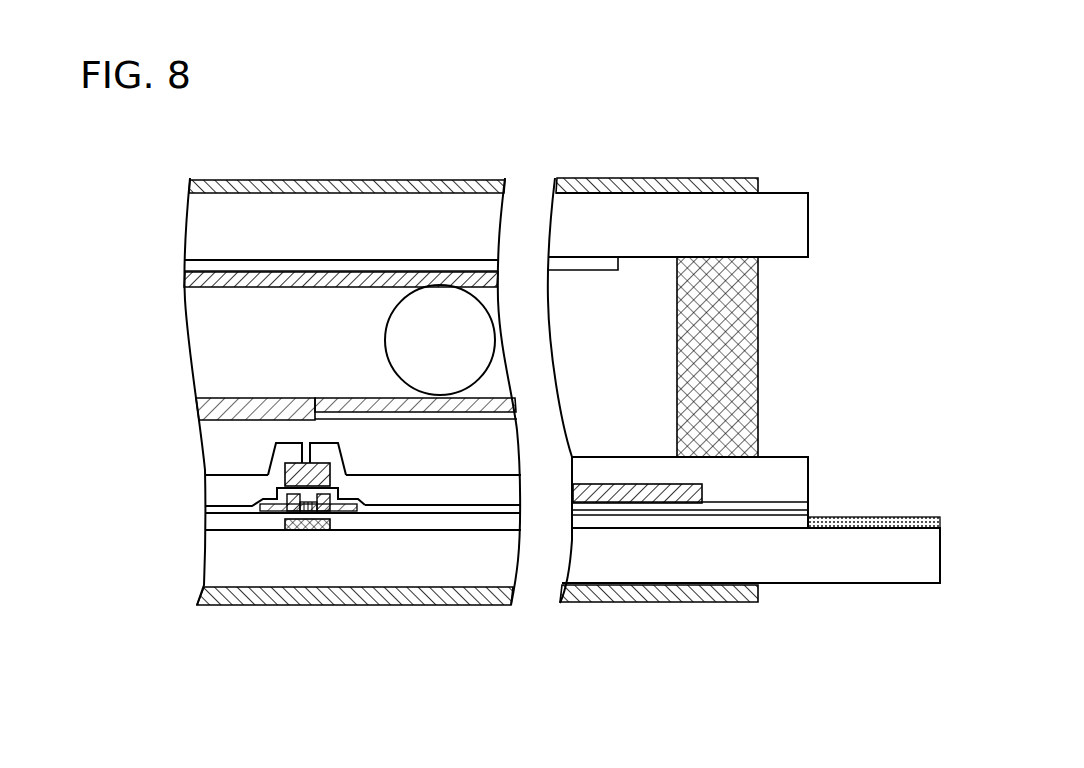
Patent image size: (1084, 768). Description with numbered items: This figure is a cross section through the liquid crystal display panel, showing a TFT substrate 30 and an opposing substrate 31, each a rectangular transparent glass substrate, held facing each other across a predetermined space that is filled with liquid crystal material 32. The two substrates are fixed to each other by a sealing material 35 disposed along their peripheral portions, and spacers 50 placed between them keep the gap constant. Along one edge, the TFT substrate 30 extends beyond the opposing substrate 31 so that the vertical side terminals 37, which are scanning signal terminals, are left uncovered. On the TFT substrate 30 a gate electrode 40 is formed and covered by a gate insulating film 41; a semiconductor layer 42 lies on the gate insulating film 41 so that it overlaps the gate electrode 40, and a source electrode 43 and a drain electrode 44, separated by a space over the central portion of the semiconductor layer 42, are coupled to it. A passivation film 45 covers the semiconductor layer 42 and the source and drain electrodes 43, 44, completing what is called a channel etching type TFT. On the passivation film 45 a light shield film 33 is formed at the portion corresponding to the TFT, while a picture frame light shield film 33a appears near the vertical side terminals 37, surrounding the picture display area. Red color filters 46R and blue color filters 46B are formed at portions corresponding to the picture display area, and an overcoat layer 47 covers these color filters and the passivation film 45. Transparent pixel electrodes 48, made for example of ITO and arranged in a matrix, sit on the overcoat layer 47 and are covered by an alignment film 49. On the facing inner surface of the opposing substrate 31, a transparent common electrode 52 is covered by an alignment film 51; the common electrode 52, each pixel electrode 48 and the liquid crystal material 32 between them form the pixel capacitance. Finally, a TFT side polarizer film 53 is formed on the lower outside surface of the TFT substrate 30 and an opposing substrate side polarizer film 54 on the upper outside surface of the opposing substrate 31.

The TFT substrate 30 is at (207, 558).
The opposing substrate 31 is at (197, 220).
The liquid crystal material 32 is at (197, 316).
The light shield film 33 is at (280, 463).
The picture frame light shield film 33a is at (647, 497).
The sealing material 35 is at (760, 331).
The vertical side terminals 37 is at (876, 517).
The gate electrode 40 is at (307, 520).
The gate insulating film 41 is at (208, 520).
The semiconductor layer 42 is at (297, 513).
The source electrode 43 is at (270, 513).
The drain electrode 44 is at (343, 513).
The passivation film 45 is at (497, 507).
The red color filter 46R is at (432, 490).
The blue color filter 46B is at (212, 490).
The overcoat layer 47 is at (212, 442).
The pixel electrodes 48 is at (352, 412).
The alignment film 49 is at (197, 402).
The spacers 50 is at (440, 326).
The alignment film 51 is at (185, 278).
The transparent common electrode 52 is at (183, 262).
The TFT side polarizer film 53 is at (202, 597).
The opposing substrate side polarizer film 54 is at (278, 182).